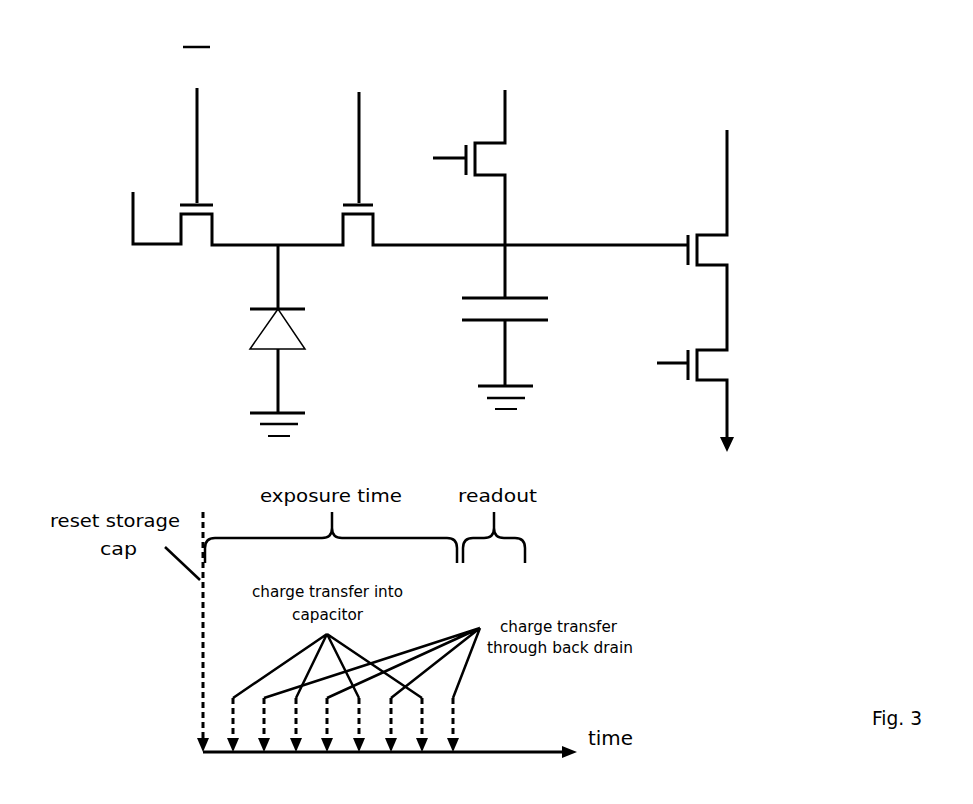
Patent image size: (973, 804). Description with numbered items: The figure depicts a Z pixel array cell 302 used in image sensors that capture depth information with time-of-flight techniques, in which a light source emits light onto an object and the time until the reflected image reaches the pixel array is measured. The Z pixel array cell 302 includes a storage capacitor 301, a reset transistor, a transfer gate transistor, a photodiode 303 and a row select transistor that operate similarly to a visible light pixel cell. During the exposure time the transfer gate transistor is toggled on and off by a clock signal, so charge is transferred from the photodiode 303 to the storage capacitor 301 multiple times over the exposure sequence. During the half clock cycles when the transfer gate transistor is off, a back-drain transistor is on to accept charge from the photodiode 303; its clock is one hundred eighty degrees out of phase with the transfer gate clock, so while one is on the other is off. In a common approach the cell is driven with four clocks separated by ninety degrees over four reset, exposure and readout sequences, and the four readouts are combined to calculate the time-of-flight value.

The storage capacitor 301 is at (462, 310).
The Z pixel array cell 302 is at (63, 391).
The photodiode 303 is at (315, 347).